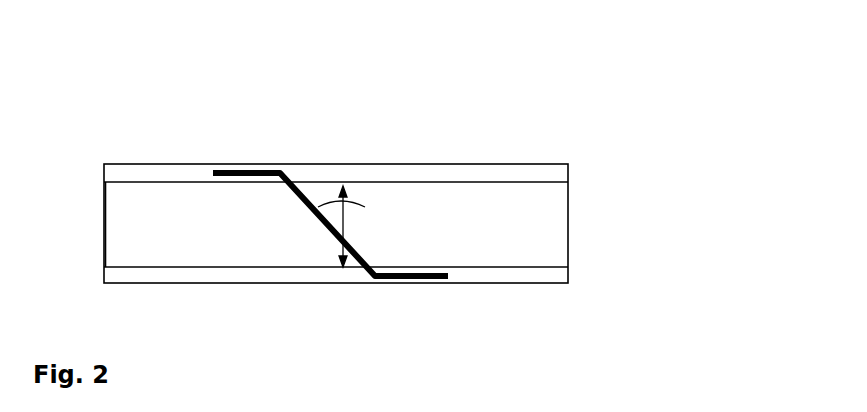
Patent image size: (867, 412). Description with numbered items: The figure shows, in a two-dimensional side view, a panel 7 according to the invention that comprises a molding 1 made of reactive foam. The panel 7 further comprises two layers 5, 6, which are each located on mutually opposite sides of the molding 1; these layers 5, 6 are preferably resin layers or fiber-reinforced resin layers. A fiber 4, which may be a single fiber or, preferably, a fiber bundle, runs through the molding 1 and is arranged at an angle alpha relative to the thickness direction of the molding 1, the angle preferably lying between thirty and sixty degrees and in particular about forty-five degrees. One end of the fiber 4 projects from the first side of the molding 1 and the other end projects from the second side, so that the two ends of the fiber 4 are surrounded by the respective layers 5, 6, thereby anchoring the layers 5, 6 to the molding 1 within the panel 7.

The molding 1 is at (558, 231).
The fiber 4 is at (293, 193).
The layer 5 is at (552, 278).
The layer 6 is at (550, 175).
The panel 7 is at (270, 118).